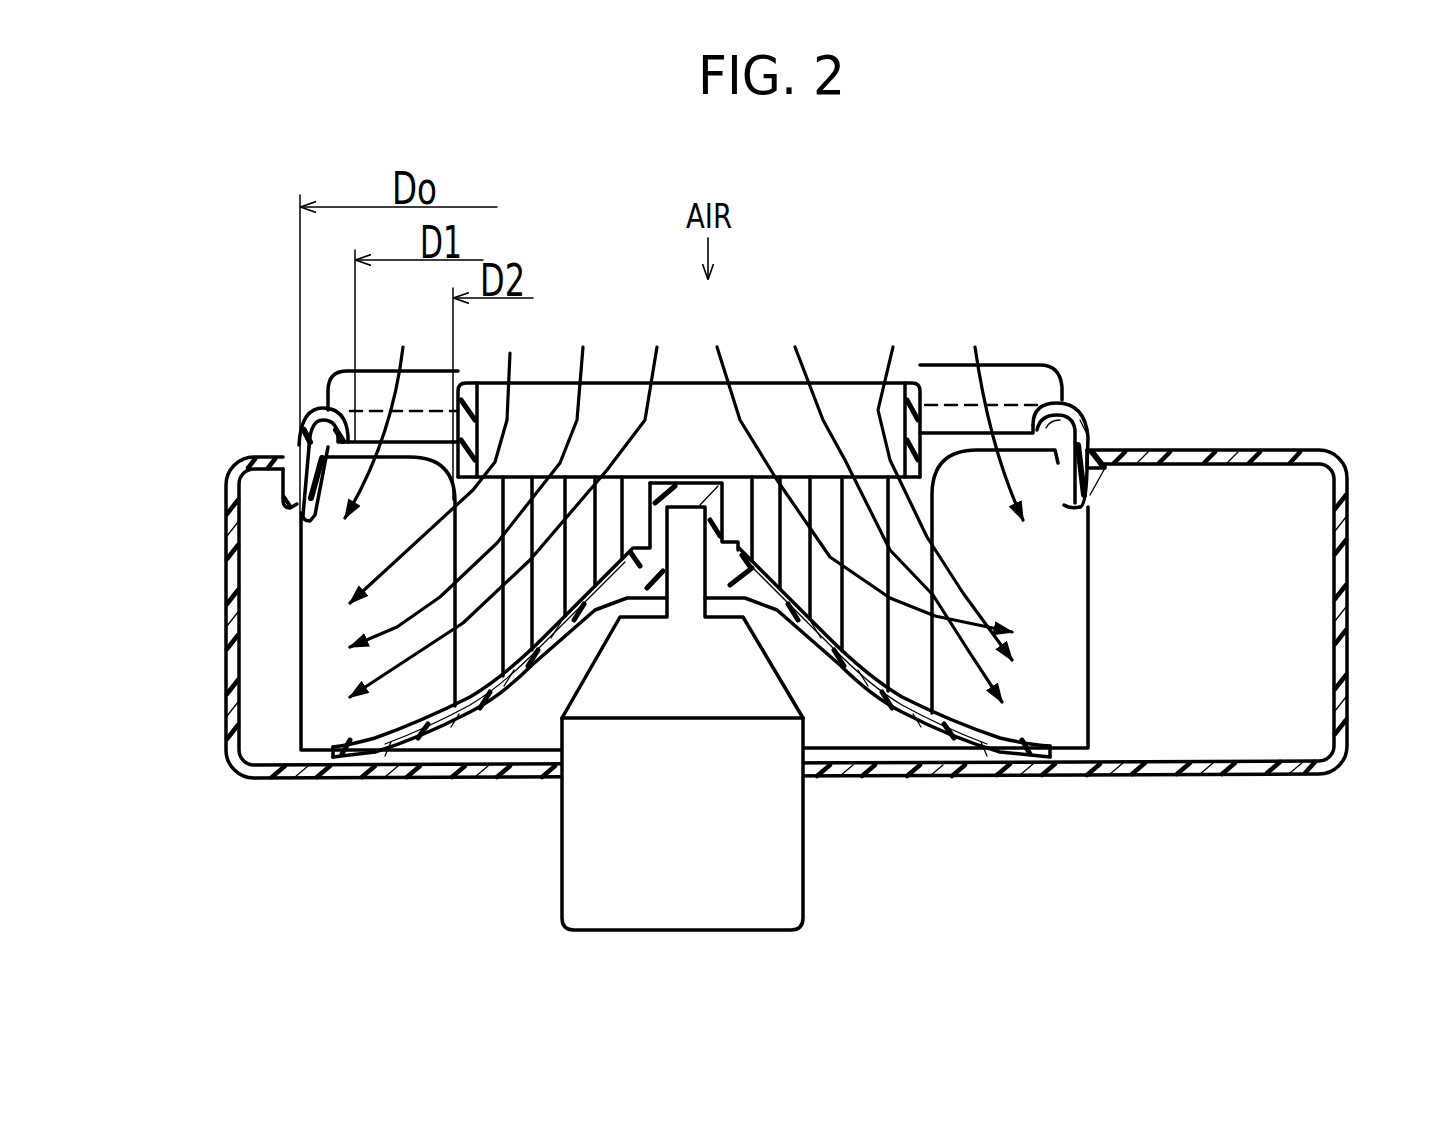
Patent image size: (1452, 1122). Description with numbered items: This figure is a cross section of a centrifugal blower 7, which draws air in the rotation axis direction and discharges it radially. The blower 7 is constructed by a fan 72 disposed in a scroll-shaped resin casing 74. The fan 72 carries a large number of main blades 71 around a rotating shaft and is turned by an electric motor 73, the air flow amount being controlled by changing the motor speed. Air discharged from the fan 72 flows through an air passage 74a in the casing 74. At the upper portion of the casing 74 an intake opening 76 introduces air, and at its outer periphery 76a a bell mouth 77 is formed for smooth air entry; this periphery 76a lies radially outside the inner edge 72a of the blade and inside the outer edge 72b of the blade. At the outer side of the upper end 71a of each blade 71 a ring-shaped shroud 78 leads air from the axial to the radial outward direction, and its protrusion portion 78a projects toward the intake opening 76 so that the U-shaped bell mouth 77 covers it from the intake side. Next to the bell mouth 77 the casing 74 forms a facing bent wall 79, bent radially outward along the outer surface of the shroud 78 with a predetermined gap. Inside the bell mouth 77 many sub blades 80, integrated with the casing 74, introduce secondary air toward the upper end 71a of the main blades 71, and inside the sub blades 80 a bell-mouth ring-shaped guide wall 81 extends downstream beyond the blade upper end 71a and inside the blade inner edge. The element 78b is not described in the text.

The centrifugal blower 7 is at (1190, 378).
The main blade 71 is at (300, 720).
The upper end of the blade 71a is at (968, 445).
The fan 72 is at (480, 728).
The inner edge of the blade 72a is at (459, 521).
The outer edge of the blade 72b is at (295, 562).
The electric motor 73 is at (803, 888).
The casing 74 is at (796, 614).
The air passage 74a is at (272, 640).
The intake opening 76 is at (858, 340).
The outer periphery of the intake opening 76a is at (1023, 429).
The bell mouth 77 is at (1038, 403).
The shroud 78 is at (1090, 437).
The protrusion portion 78a is at (1085, 425).
The seal foot 78b is at (1100, 503).
The facing bent wall 79 is at (1105, 467).
The sub blade 80 is at (1057, 403).
The guide wall 81 is at (890, 420).